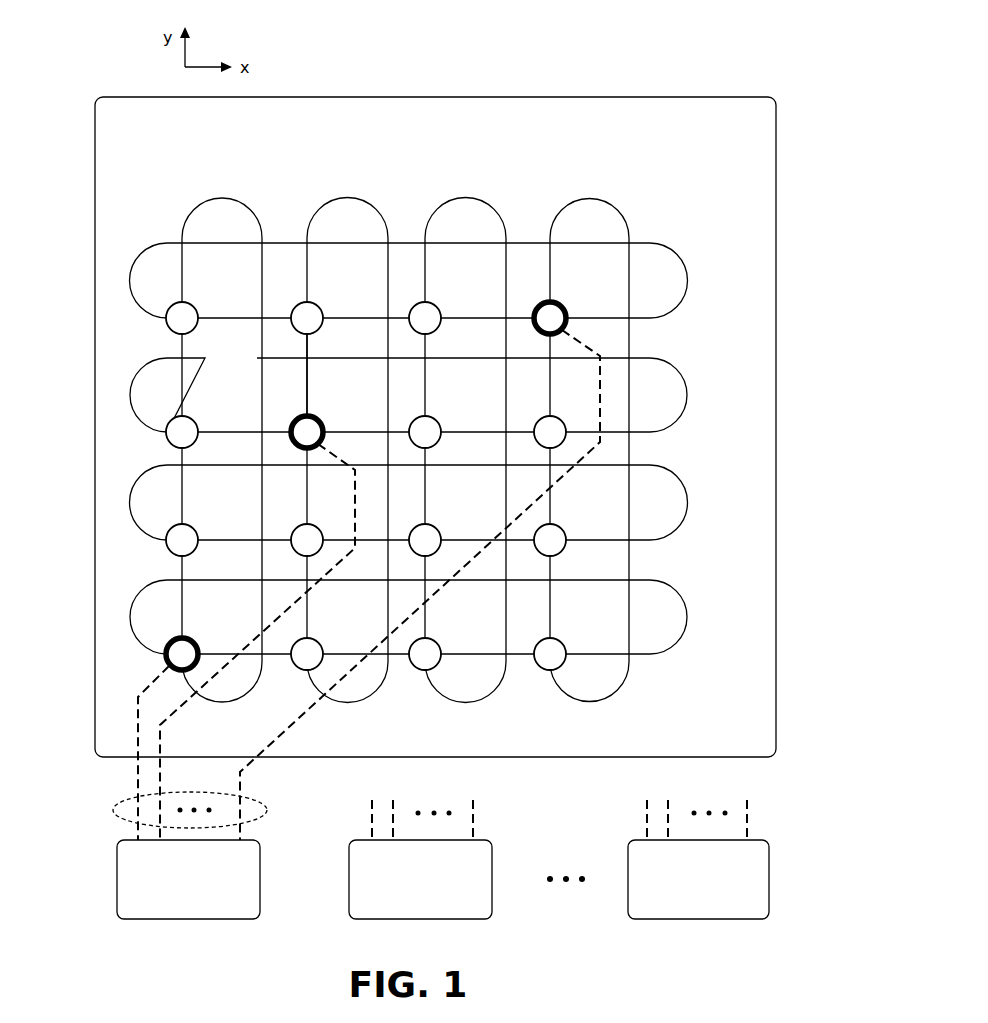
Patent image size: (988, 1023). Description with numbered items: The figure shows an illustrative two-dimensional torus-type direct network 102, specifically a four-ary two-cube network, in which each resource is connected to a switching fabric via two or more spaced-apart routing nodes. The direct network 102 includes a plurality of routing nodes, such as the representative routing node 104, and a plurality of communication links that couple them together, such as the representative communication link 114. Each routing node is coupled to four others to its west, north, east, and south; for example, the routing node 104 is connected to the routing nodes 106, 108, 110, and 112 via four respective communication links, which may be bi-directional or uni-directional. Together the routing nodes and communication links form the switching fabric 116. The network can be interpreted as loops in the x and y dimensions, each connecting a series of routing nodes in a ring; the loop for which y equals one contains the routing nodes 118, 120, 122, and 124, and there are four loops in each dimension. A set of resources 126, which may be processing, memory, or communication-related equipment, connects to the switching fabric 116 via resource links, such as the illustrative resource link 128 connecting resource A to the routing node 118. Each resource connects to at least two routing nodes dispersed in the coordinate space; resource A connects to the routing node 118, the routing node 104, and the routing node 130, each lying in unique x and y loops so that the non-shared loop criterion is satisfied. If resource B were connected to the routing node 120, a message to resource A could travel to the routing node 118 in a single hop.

The direct network 102 is at (436, 38).
The routing node 104 is at (292, 423).
The routing node 106 is at (167, 430).
The routing node 108 is at (295, 307).
The routing node 110 is at (410, 422).
The routing node 112 is at (292, 529).
The communication link 114 is at (307, 380).
The switching fabric 116 is at (428, 427).
The routing node 118 is at (167, 651).
The routing node 120 is at (292, 644).
The routing node 122 is at (410, 644).
The routing node 124 is at (535, 644).
The resources 126 is at (107, 823).
The resource link 128 is at (137, 779).
The routing node 130 is at (535, 306).